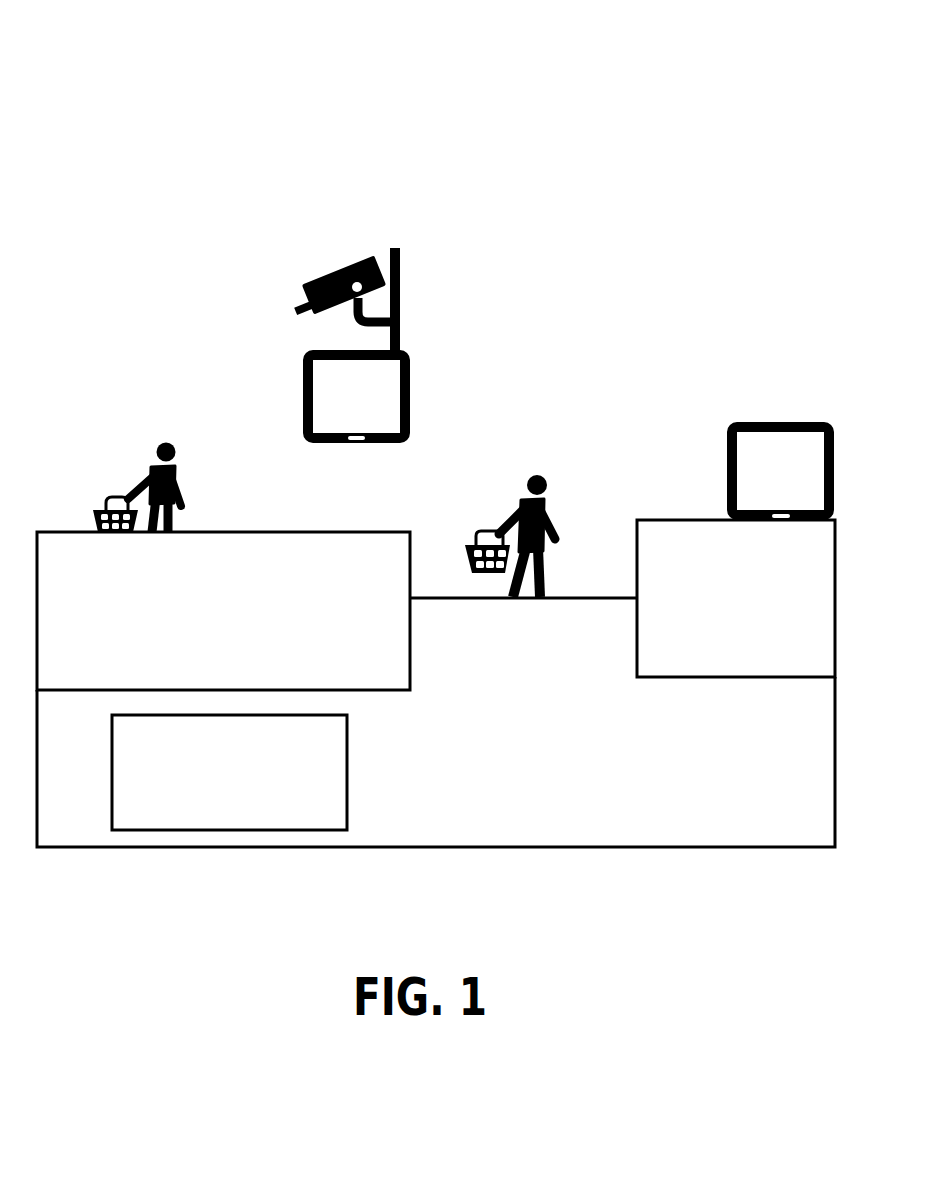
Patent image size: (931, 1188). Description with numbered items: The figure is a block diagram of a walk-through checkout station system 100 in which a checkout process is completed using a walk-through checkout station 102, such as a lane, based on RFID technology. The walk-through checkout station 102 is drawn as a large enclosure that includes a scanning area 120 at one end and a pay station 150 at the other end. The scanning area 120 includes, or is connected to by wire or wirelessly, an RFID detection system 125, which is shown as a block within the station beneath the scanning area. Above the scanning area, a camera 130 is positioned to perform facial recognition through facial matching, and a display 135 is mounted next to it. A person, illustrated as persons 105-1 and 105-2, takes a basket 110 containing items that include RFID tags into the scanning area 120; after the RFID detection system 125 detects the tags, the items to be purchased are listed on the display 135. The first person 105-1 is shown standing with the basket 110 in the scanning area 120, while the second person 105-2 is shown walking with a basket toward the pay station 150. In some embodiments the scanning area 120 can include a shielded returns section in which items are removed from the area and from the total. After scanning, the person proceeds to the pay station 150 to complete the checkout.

The walk-through checkout station system 100 is at (228, 91).
The walk-through checkout station 102 is at (555, 792).
The person 105-1 is at (172, 430).
The person 105-2 is at (547, 482).
The basket 110 is at (113, 500).
The scanning area 120 is at (247, 644).
The RFID detection system 125 is at (252, 822).
The camera 130 is at (355, 260).
The display 135 is at (408, 378).
The pay station 150 is at (762, 629).